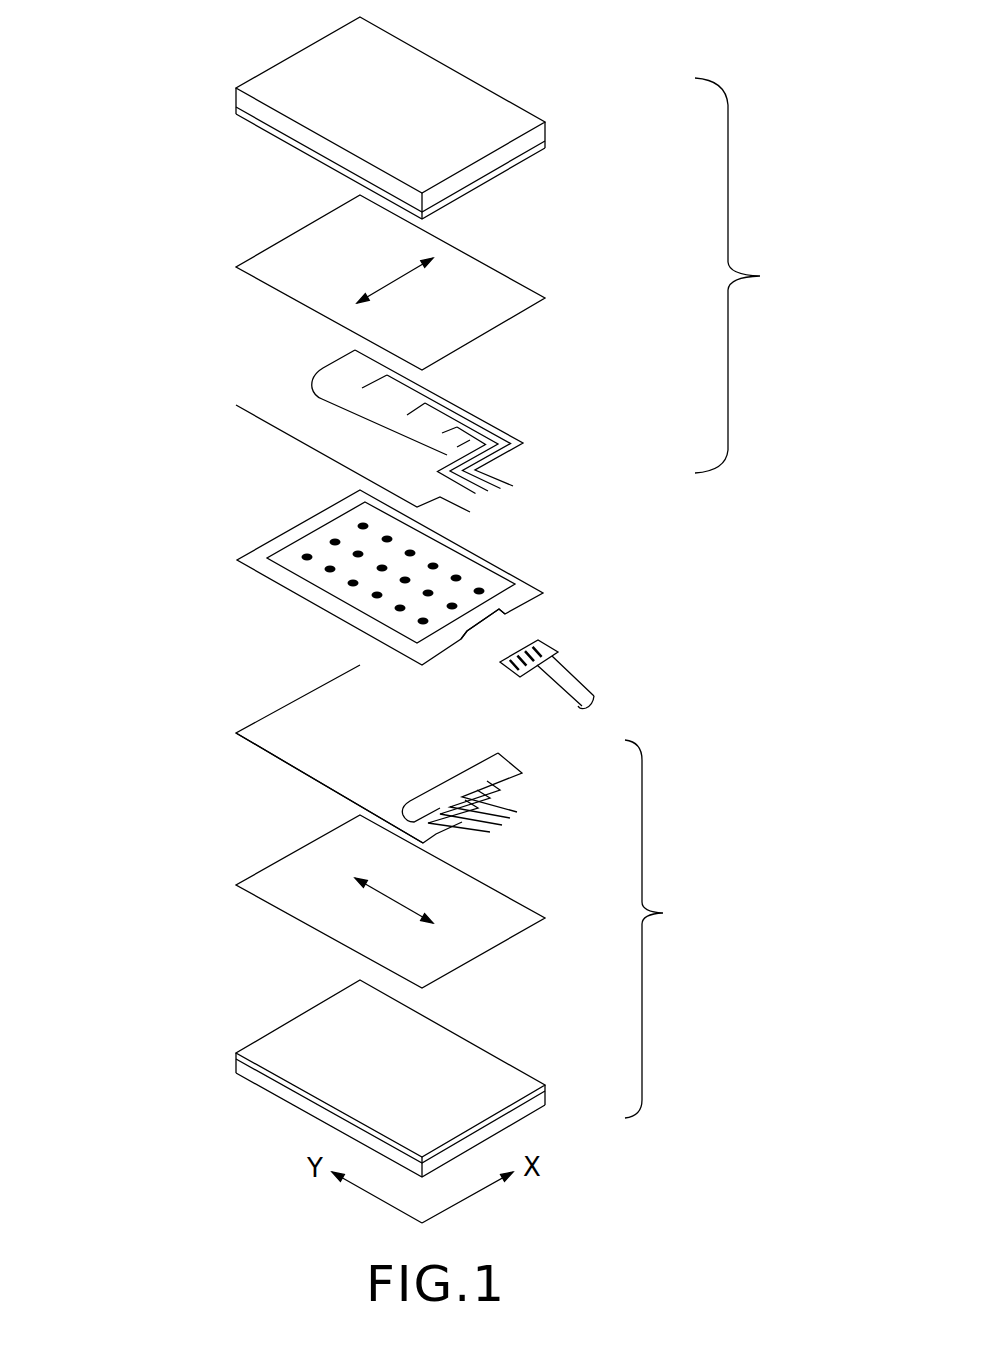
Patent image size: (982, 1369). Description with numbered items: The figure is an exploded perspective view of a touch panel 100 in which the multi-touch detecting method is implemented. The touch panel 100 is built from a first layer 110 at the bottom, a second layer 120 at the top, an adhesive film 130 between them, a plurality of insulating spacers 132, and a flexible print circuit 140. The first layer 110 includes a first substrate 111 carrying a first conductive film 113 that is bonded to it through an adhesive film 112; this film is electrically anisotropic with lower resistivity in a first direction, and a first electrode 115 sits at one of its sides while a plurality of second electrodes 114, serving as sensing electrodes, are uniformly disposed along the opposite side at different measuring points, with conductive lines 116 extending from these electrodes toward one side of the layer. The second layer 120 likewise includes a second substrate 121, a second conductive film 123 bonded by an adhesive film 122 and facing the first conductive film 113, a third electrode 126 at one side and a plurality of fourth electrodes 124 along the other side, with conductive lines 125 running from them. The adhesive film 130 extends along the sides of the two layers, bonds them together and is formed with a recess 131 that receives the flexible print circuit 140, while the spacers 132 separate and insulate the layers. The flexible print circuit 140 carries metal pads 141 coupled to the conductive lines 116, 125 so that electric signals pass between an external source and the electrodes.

The touch panel 100 is at (155, 46).
The first layer 110 is at (665, 913).
The first substrate 111 is at (538, 1110).
The adhesive film 112 is at (510, 1082).
The first conductive film 113 is at (512, 918).
The second electrodes 114 is at (452, 778).
The first electrode 115 is at (298, 700).
The conductive lines 116 is at (328, 787).
The second layer 120 is at (762, 276).
The second substrate 121 is at (500, 110).
The adhesive film 122 is at (513, 168).
The second conductive film 123 is at (500, 287).
The fourth electrodes 124 is at (353, 417).
The conductive lines 125 is at (482, 423).
The third electrode 126 is at (263, 412).
The adhesive film 130 is at (498, 570).
The recess 131 is at (518, 612).
The spacers 132 is at (305, 553).
The flexible print circuit 140 is at (574, 674).
The metal pads 141 is at (541, 640).